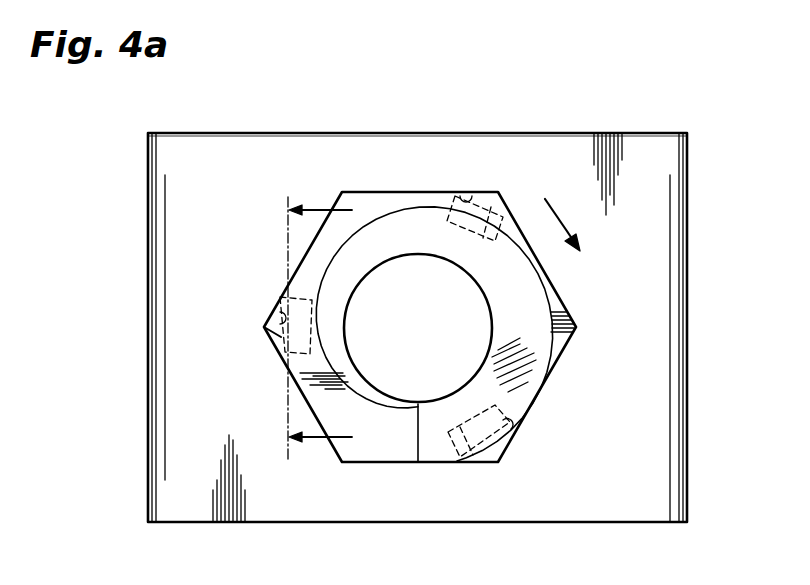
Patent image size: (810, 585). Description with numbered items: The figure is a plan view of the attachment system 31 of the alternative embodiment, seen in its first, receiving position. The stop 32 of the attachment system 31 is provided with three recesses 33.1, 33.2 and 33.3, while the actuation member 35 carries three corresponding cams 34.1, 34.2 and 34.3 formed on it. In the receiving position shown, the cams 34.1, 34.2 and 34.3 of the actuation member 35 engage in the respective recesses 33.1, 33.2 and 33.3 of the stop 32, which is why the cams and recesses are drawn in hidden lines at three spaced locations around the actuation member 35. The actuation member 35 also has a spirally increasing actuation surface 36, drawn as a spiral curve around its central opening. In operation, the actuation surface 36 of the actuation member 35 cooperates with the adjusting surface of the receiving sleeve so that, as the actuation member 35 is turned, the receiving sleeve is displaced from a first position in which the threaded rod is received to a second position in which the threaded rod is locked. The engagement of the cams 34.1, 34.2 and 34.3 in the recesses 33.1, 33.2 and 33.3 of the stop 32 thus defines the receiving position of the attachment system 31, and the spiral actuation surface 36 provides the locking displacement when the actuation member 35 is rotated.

The attachment system 31 is at (650, 104).
The stop 32 is at (687, 264).
The recess 33.1 is at (278, 316).
The recess 33.2 is at (466, 193).
The recess 33.3 is at (513, 452).
The cam 34.1 is at (266, 330).
The cam 34.2 is at (500, 193).
The cam 34.3 is at (448, 457).
The actuation member 35 is at (557, 364).
The actuation surface 36 is at (512, 304).